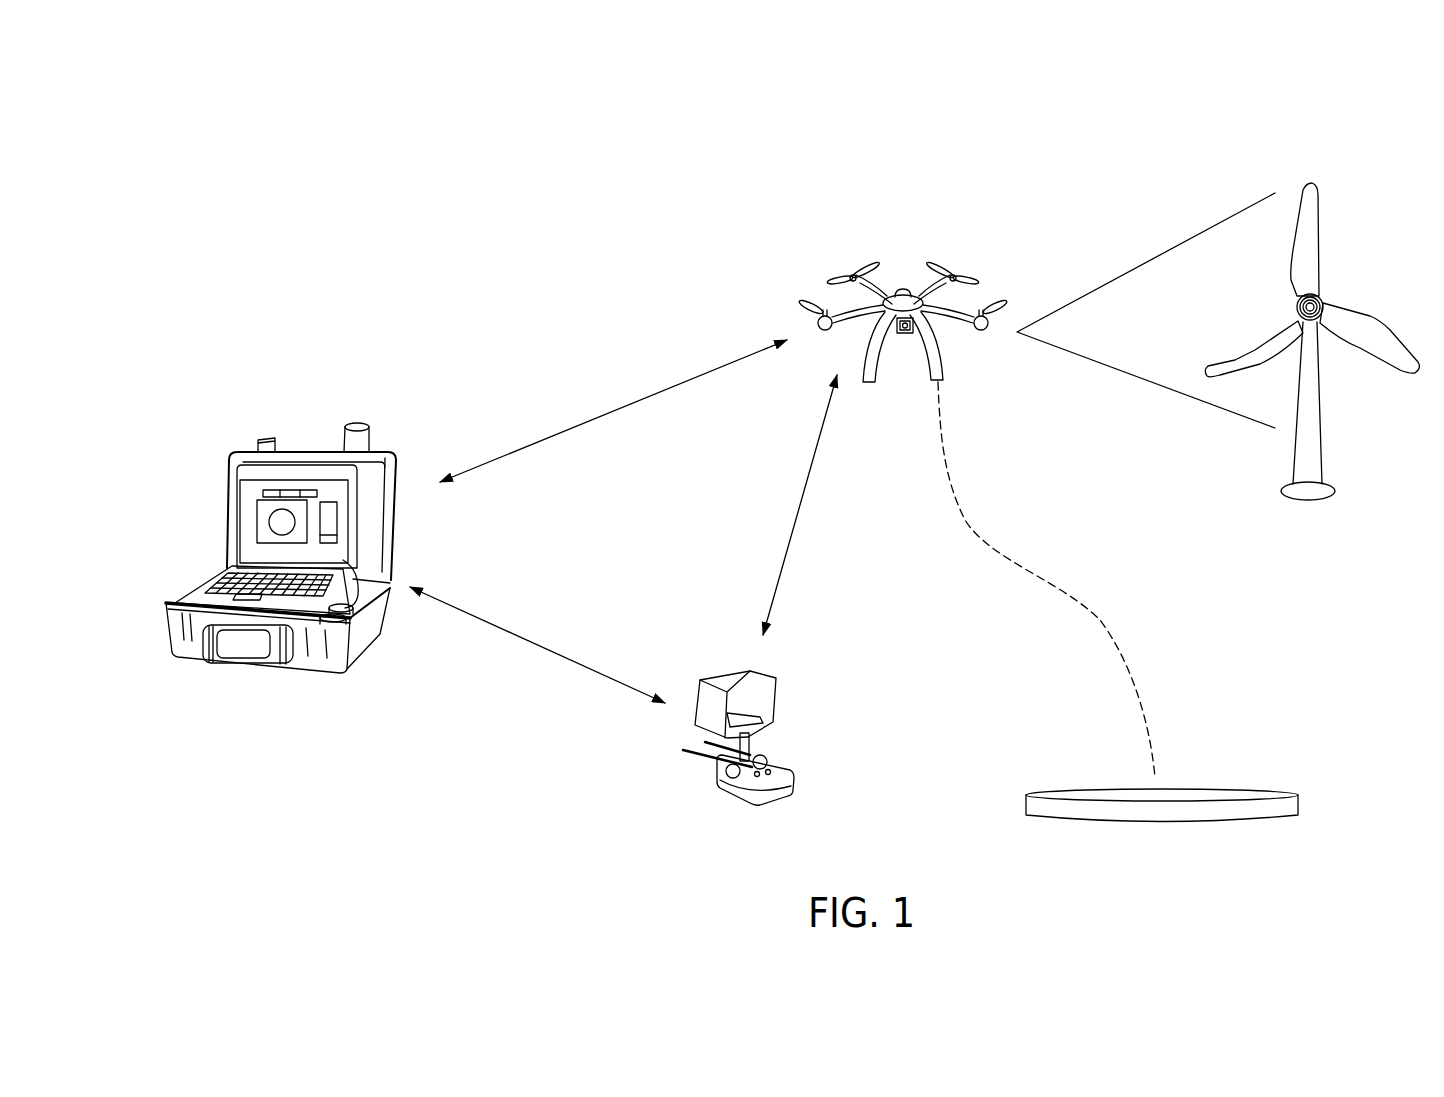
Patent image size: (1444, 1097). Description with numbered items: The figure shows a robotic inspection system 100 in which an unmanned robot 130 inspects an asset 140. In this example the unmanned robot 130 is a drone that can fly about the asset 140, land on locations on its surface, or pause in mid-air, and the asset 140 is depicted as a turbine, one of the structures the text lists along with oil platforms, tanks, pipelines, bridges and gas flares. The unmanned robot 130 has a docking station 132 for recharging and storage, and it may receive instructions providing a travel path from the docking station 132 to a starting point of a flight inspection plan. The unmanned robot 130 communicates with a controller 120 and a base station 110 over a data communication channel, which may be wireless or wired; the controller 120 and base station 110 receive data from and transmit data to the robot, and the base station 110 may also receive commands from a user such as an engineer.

The robotic inspection system 100 is at (1236, 124).
The base station 110 is at (303, 452).
The controller 120 is at (712, 678).
The unmanned robot 130 is at (904, 289).
The docking station 132 is at (1243, 788).
The asset 140 is at (1322, 402).